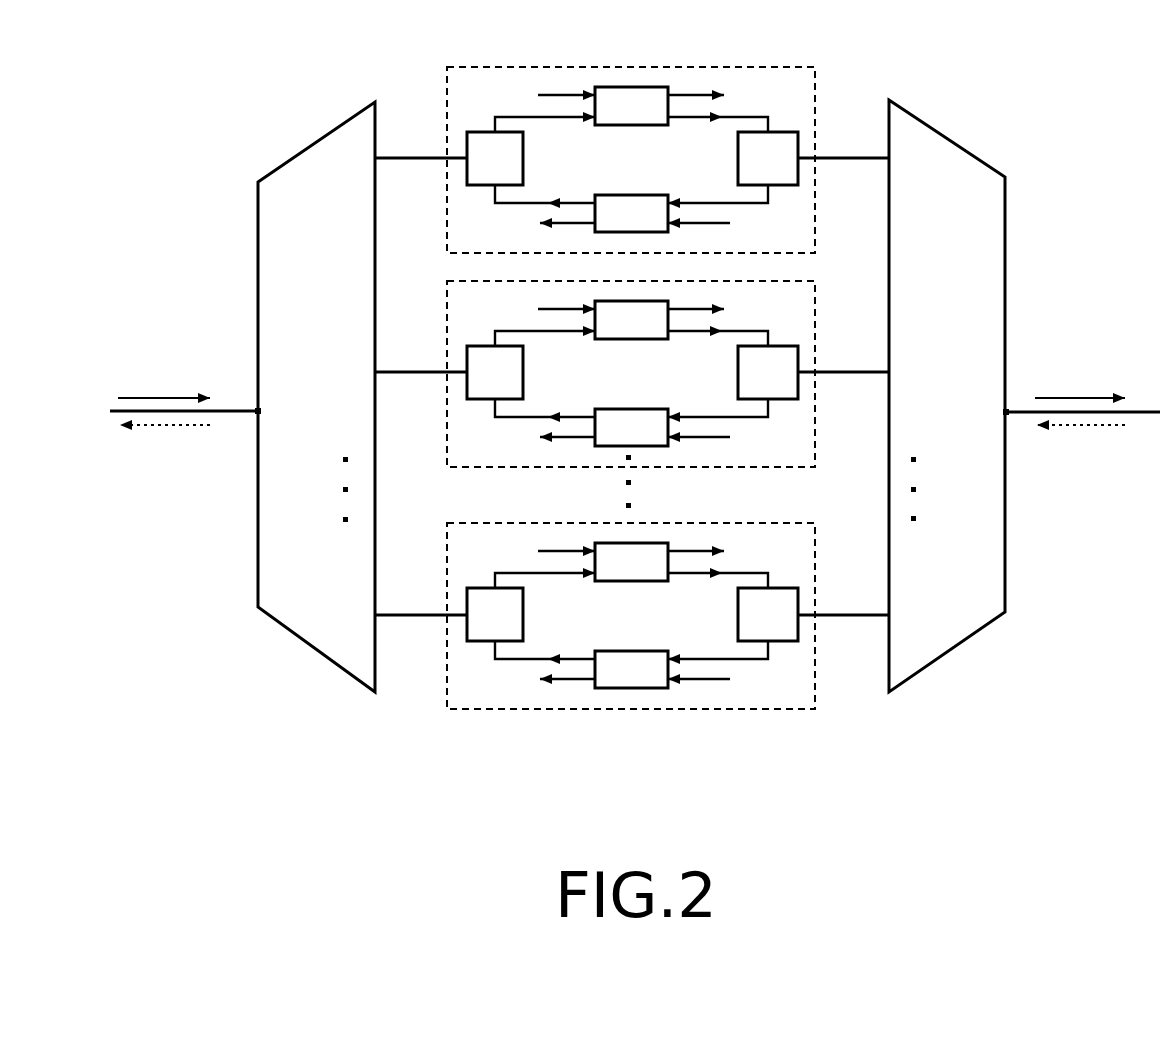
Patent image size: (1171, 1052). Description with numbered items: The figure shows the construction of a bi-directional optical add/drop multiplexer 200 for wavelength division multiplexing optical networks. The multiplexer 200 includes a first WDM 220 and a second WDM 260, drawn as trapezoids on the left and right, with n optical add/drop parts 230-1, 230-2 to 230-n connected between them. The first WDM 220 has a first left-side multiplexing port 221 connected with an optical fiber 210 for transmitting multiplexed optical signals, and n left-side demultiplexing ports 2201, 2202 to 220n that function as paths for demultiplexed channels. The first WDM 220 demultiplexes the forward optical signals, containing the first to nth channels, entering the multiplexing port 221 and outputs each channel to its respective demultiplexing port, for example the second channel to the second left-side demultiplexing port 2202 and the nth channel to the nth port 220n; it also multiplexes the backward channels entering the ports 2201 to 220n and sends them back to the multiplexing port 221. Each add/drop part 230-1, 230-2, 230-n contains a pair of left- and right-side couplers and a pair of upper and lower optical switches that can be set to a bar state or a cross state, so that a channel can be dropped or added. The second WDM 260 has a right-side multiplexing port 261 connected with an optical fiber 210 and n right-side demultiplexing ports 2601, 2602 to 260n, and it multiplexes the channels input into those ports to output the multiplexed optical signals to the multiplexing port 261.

The bi-directional optical add/drop multiplexer 200 is at (614, 774).
The optical fiber 210 is at (633, 396).
The first WDM 220 is at (275, 397).
The first left-side multiplexing port 221 is at (238, 453).
The first left-side demultiplexing port 2201 is at (421, 125).
The second left-side demultiplexing port 2202 is at (421, 344).
The nth left-side demultiplexing port 220n is at (421, 586).
The first add/drop part 230-1 is at (631, 133).
The second add/drop part 230-2 is at (600, 379).
The nth add/drop part 230-n is at (596, 627).
The second WDM 260 is at (950, 392).
The right-side multiplexing port 261 is at (1028, 458).
The first right-side demultiplexing port 2601 is at (849, 119).
The second right-side demultiplexing port 2602 is at (843, 344).
The nth right-side demultiplexing port 260n is at (843, 586).